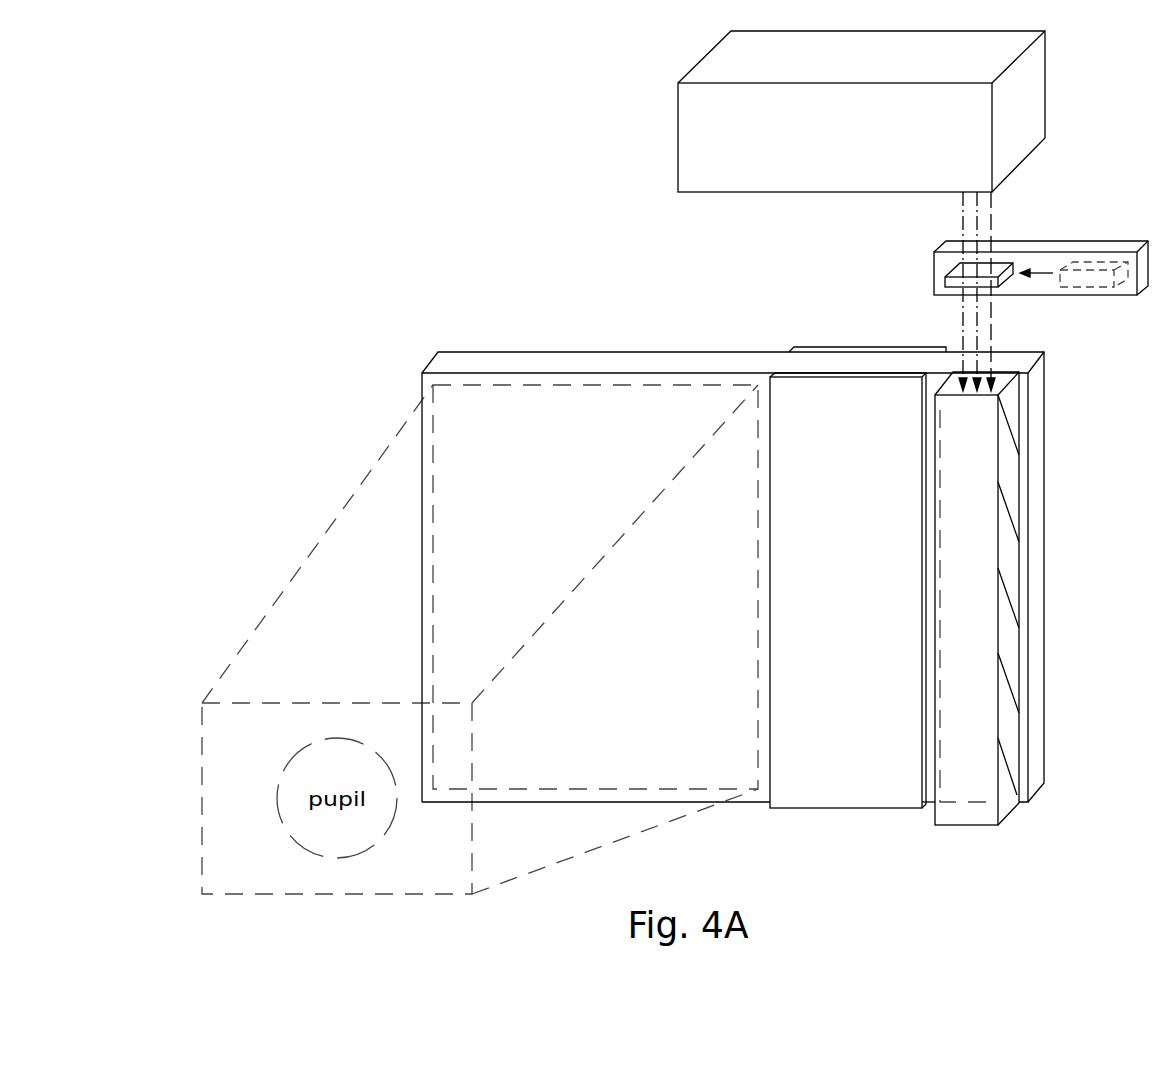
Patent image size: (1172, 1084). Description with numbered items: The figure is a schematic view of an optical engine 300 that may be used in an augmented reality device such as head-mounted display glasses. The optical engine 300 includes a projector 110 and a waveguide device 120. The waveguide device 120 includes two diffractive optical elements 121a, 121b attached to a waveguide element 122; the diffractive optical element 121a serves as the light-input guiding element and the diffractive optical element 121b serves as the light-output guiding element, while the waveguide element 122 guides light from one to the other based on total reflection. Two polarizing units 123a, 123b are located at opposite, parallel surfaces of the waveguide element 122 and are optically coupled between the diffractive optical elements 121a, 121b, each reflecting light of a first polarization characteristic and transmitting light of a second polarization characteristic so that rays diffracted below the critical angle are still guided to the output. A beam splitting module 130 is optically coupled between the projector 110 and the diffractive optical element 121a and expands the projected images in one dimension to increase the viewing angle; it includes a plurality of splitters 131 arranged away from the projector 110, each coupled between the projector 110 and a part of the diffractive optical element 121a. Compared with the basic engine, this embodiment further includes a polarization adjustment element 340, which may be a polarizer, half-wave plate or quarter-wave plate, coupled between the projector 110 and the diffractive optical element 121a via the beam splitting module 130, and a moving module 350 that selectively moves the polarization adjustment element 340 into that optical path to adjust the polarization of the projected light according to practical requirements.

The optical engine 300 is at (198, 61).
The projector 110 is at (1033, 97).
The waveguide device 120 is at (784, 233).
The diffractive optical element 121a is at (942, 417).
The diffractive optical element 121b is at (493, 385).
The waveguide element 122 is at (565, 363).
The polarizing unit 123a is at (808, 348).
The polarizing unit 123b is at (787, 375).
The beam splitting module 130 is at (1028, 629).
The splitters 131 is at (1010, 402).
The polarization adjustment element 340 is at (945, 273).
The moving module 350 is at (1048, 244).